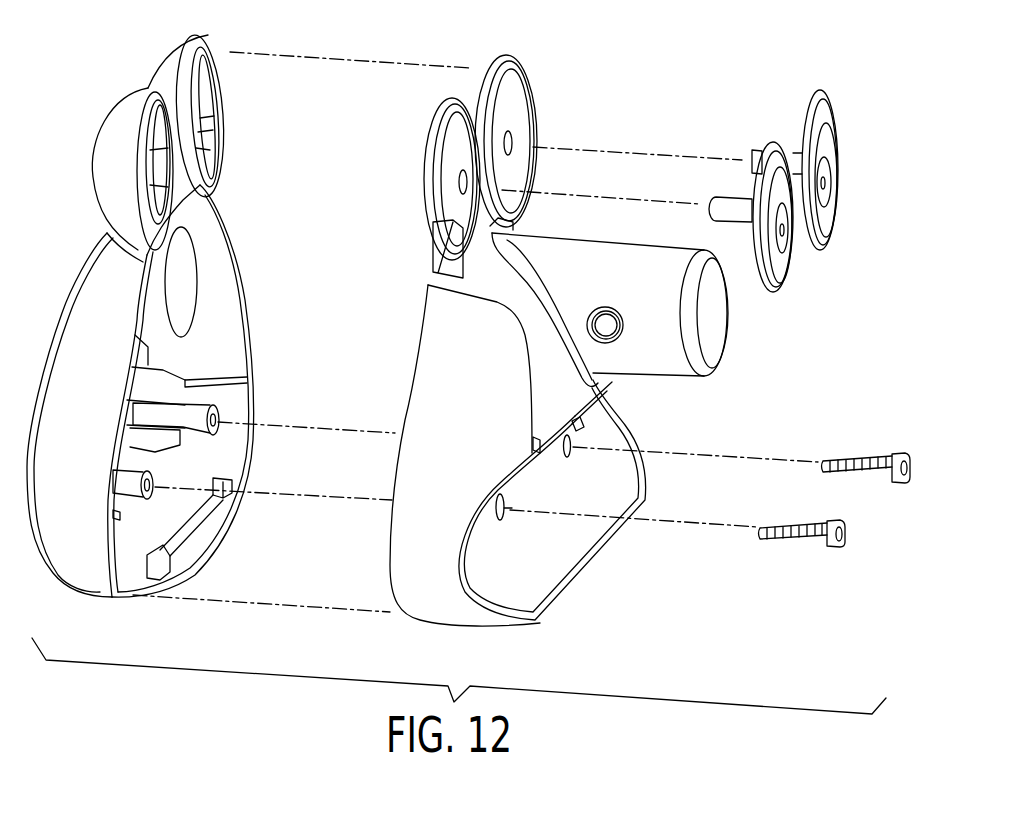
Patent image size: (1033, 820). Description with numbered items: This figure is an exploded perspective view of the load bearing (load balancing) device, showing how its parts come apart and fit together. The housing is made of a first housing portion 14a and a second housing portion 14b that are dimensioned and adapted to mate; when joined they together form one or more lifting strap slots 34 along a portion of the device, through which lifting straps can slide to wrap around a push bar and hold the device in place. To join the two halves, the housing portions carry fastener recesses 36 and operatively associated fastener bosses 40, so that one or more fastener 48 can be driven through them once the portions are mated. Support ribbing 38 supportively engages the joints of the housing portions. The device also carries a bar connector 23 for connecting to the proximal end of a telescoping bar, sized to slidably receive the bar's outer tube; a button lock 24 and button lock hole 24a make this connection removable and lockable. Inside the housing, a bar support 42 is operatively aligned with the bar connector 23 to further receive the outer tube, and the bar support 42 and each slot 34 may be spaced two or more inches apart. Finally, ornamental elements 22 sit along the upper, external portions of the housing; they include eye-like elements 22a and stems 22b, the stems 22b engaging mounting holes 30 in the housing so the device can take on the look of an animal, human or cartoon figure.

The first housing portion 14a is at (65, 553).
The second housing portion 14b is at (478, 622).
The ornamental elements 22 is at (173, 63).
The eye-like elements 22a is at (773, 143).
The stems 22b is at (720, 200).
The bar connector 23 is at (618, 253).
The button lock 24 is at (608, 322).
The button lock hole 24a is at (612, 328).
The mounting holes 30 is at (510, 137).
The lifting strap slots 34 is at (138, 567).
The fastener recesses 36 is at (505, 498).
The support ribbing 38 is at (195, 102).
The fastener bosses 40 is at (200, 433).
The bar support 42 is at (187, 263).
The fastener 48 is at (847, 471).